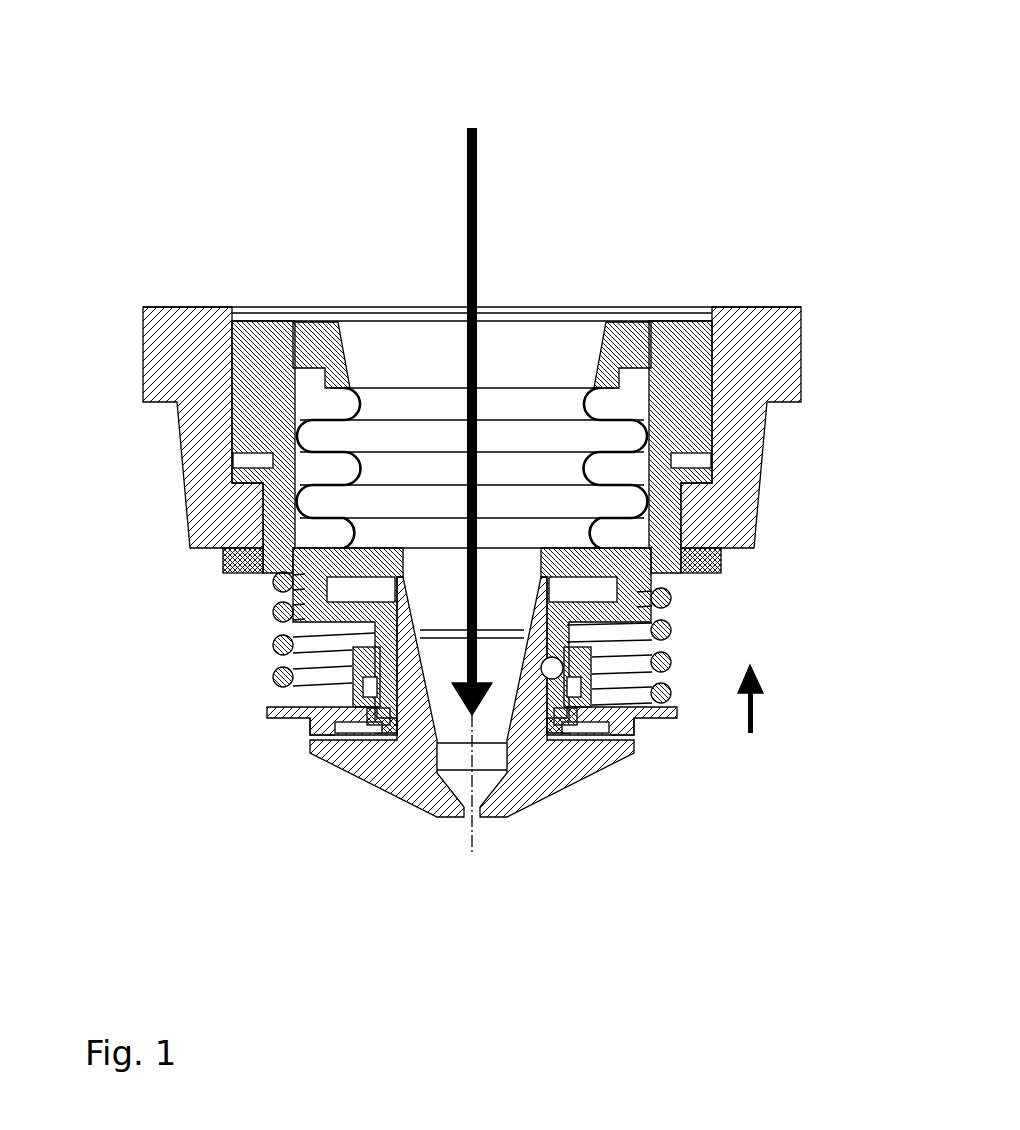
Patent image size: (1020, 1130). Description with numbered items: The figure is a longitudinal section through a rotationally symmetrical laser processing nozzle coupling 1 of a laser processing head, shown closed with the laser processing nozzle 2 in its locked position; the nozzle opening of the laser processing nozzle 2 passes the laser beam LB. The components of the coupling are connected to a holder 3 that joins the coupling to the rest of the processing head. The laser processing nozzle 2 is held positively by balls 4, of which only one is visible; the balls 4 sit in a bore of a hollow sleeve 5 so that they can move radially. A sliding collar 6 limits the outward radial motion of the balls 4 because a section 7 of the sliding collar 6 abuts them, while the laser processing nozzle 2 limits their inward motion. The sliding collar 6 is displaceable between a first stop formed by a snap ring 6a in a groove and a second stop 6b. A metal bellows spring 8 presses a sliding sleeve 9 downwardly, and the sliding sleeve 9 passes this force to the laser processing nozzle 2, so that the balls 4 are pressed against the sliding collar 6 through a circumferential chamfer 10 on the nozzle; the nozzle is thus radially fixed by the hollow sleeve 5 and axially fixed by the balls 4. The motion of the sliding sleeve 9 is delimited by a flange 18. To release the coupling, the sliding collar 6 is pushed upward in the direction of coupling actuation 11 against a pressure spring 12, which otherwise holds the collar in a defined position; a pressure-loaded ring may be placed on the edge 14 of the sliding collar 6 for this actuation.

The laser processing nozzle coupling 1 is at (558, 212).
The laser processing nozzle 2 is at (540, 770).
The holder 3 is at (190, 353).
The balls 4 is at (552, 668).
The hollow sleeve 5 is at (258, 407).
The sliding collar 6 is at (637, 720).
The snap ring 6a is at (557, 713).
The second stop 6b is at (593, 610).
The section 7 is at (290, 655).
The metal bellows spring 8 is at (592, 438).
The sliding sleeve 9 is at (406, 647).
The circumferential chamfer 10 is at (392, 645).
The direction of coupling actuation 11 is at (752, 702).
The pressure spring 12 is at (292, 687).
The edge 14 is at (270, 720).
The flange 18 is at (680, 487).
The laser beam LB is at (465, 177).